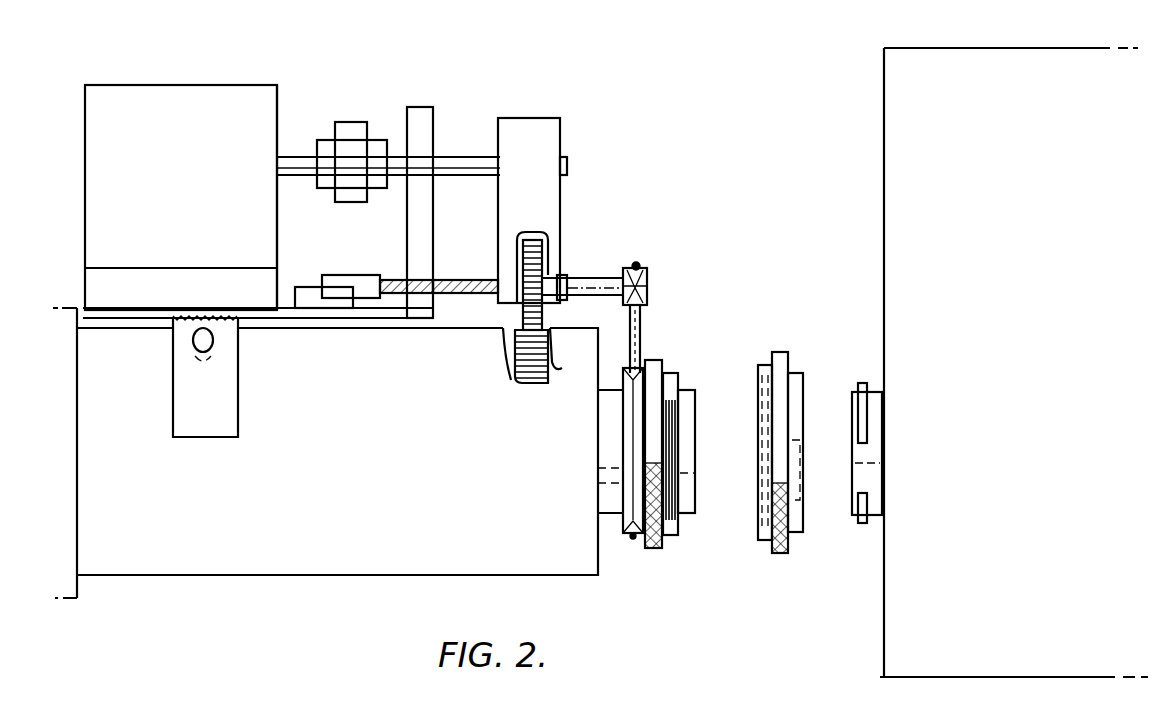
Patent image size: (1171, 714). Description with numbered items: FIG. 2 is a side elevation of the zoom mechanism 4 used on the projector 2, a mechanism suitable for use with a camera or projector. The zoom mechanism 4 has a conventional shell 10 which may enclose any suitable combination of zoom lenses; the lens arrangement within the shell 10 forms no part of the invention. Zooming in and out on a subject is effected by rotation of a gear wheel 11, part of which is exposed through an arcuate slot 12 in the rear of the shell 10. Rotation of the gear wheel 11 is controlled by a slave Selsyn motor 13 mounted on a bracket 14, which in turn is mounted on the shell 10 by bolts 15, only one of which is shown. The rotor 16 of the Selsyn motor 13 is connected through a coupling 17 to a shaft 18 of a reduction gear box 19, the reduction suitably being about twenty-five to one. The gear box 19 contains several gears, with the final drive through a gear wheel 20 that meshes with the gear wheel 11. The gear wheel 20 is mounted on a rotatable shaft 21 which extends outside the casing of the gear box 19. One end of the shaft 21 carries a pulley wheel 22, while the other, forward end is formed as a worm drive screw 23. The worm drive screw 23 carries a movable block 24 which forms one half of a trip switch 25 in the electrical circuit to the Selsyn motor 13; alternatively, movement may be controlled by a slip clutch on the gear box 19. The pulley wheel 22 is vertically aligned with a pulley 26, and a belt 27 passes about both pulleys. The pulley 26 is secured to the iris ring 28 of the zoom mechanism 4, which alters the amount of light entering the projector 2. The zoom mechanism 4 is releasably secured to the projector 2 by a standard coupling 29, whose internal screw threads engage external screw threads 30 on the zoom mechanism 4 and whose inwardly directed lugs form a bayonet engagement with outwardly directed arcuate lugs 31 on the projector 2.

The projector 2 is at (955, 42).
The zoom mechanism 4 is at (447, 60).
The shell 10 is at (322, 575).
The gear wheel 11 is at (515, 366).
The arcuate slot 12 is at (553, 366).
The slave Selsyn motor 13 is at (188, 172).
The bracket 14 is at (258, 318).
The bolts 15 is at (193, 341).
The rotor 16 is at (300, 157).
The coupling 17 is at (347, 122).
The shaft 18 is at (395, 157).
The reduction gear box 19 is at (518, 118).
The gear wheel 20 is at (540, 250).
The rotatable shaft 21 is at (586, 278).
The pulley wheel 22 is at (647, 282).
The worm drive screw 23 is at (455, 280).
The movable block 24 is at (352, 275).
The trip switch 25 is at (326, 290).
The pulley 26 is at (633, 538).
The belt 27 is at (643, 316).
The iris ring 28 is at (656, 360).
The standard coupling 29 is at (785, 554).
The external screw threads 30 is at (672, 536).
The outwardly directed arcuate lugs 31 is at (862, 383).